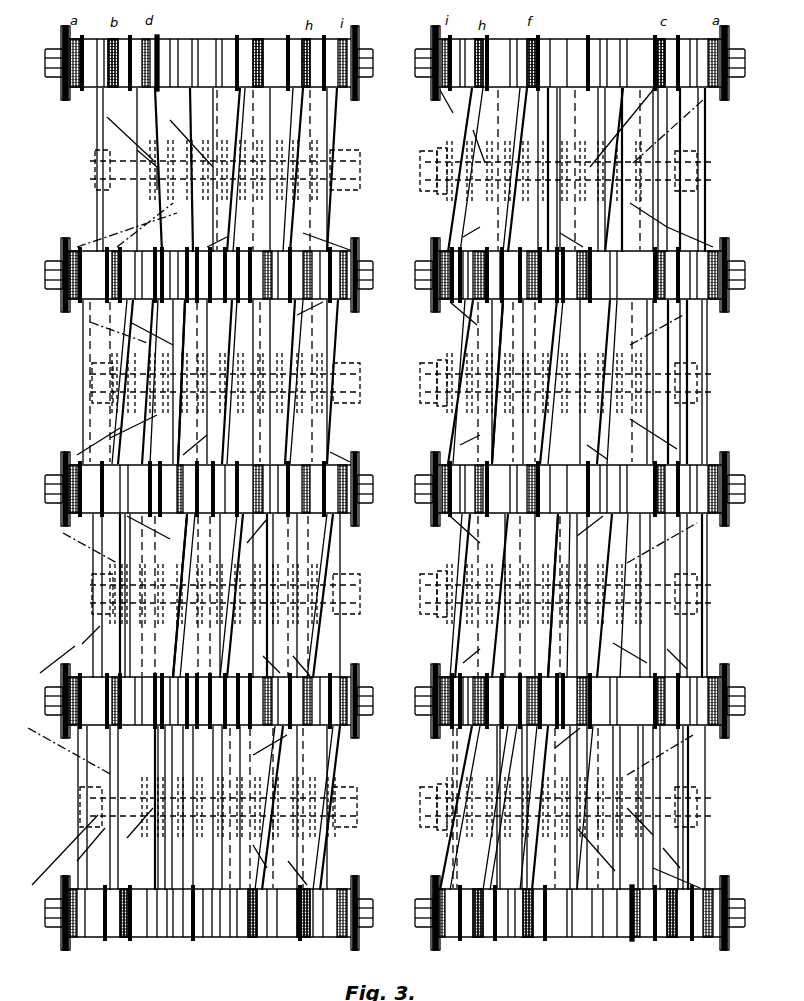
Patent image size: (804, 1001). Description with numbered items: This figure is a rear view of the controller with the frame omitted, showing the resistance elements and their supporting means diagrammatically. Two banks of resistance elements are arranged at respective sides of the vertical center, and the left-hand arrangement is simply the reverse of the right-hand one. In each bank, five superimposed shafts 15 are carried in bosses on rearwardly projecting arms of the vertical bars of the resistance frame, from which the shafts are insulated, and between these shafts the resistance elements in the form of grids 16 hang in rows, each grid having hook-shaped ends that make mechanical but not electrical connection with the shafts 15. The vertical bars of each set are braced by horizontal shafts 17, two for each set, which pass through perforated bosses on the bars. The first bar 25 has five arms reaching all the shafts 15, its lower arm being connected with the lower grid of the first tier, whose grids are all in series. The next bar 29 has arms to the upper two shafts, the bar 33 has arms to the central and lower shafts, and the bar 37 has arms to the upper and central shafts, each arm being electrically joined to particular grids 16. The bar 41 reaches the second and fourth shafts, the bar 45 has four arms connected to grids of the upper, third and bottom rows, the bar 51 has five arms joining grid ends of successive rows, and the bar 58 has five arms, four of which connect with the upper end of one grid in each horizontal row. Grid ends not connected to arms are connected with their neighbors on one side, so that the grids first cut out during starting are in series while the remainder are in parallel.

The shaft 15 is at (745, 701).
The grid 16 is at (688, 854).
The horizontal shaft 17 is at (707, 810).
The first bar 25 is at (718, 940).
The vertical bar 29 is at (670, 938).
The vertical bar 33 is at (125, 938).
The vertical bar 37 is at (636, 938).
The vertical bar 41 is at (597, 676).
The vertical bar 45 is at (528, 938).
The vertical bar 51 is at (478, 938).
The bar 58 is at (438, 938).